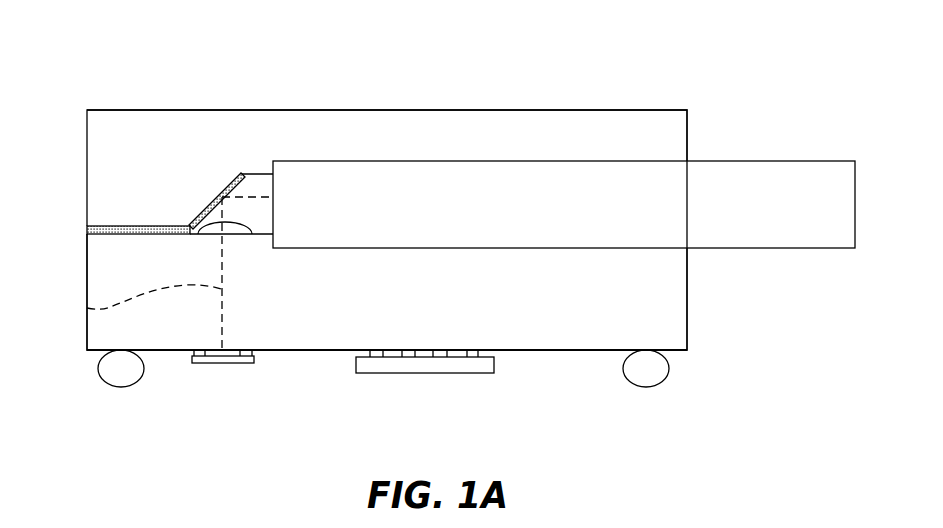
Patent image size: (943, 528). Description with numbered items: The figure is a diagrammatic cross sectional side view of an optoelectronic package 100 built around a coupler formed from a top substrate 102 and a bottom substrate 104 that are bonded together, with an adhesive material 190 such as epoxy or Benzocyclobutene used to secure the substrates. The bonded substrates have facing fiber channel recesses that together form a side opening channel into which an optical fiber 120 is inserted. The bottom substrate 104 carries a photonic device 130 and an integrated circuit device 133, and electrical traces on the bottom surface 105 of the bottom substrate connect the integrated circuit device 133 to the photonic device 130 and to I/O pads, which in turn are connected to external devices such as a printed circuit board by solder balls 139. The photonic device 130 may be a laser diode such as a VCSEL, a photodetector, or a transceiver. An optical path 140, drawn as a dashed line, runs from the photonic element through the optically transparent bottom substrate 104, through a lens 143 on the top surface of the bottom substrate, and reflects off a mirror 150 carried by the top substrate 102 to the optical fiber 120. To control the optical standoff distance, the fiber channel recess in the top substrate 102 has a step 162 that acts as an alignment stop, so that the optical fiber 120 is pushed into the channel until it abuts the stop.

The optoelectronic package 100 is at (470, 39).
The top substrate 102 is at (604, 131).
The bottom substrate 104 is at (662, 292).
The bottom surface 105 is at (297, 350).
The optical fiber 120 is at (800, 160).
The photonic device 130 is at (220, 362).
The integrated circuit device 133 is at (433, 377).
The solder balls 139 is at (647, 386).
The optical path 140 is at (87, 308).
The lens 143 is at (197, 234).
The mirror 150 is at (207, 193).
The step 162 is at (273, 161).
The adhesive material 190 is at (87, 231).